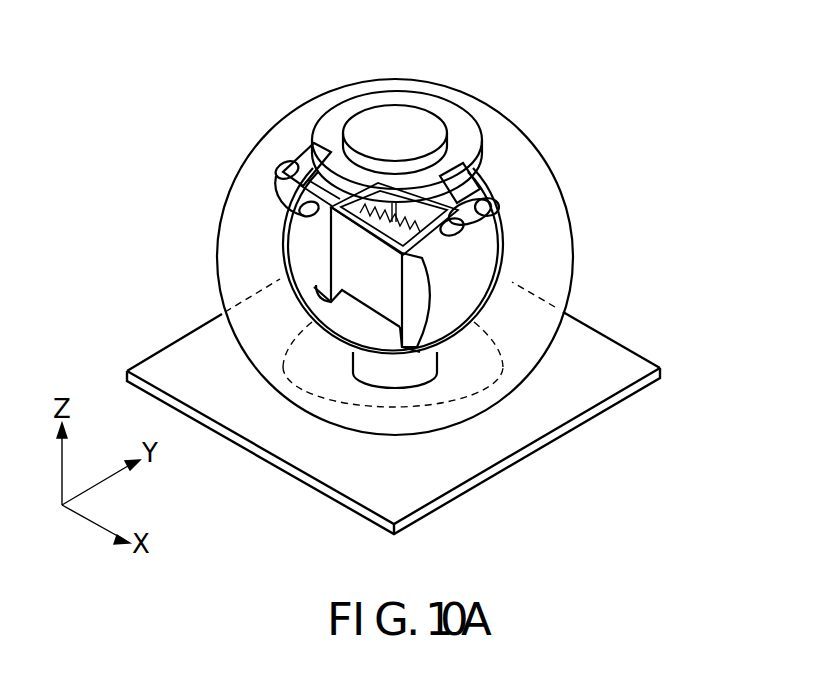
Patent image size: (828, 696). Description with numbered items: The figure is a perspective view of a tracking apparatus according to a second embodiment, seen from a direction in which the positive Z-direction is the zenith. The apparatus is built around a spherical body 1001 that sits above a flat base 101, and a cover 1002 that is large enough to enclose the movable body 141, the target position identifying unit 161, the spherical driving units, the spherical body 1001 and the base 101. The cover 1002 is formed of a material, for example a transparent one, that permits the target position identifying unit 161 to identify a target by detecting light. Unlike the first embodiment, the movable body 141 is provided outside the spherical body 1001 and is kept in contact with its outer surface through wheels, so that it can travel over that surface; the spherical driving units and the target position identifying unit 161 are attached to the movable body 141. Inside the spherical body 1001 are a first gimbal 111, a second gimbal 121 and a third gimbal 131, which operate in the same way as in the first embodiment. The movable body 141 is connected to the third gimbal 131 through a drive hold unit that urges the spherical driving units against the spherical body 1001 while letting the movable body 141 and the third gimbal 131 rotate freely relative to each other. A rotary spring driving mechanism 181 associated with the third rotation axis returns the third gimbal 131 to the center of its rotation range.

The base 101 is at (523, 413).
The first gimbal 111 is at (460, 316).
The second gimbal 121 is at (343, 272).
The third gimbal 131 is at (345, 248).
The movable body 141 is at (330, 135).
The target position identifying unit 161 is at (368, 123).
The rotary spring driving mechanism 181 is at (345, 240).
The spherical body 1001 is at (500, 232).
The cover 1002 is at (568, 223).